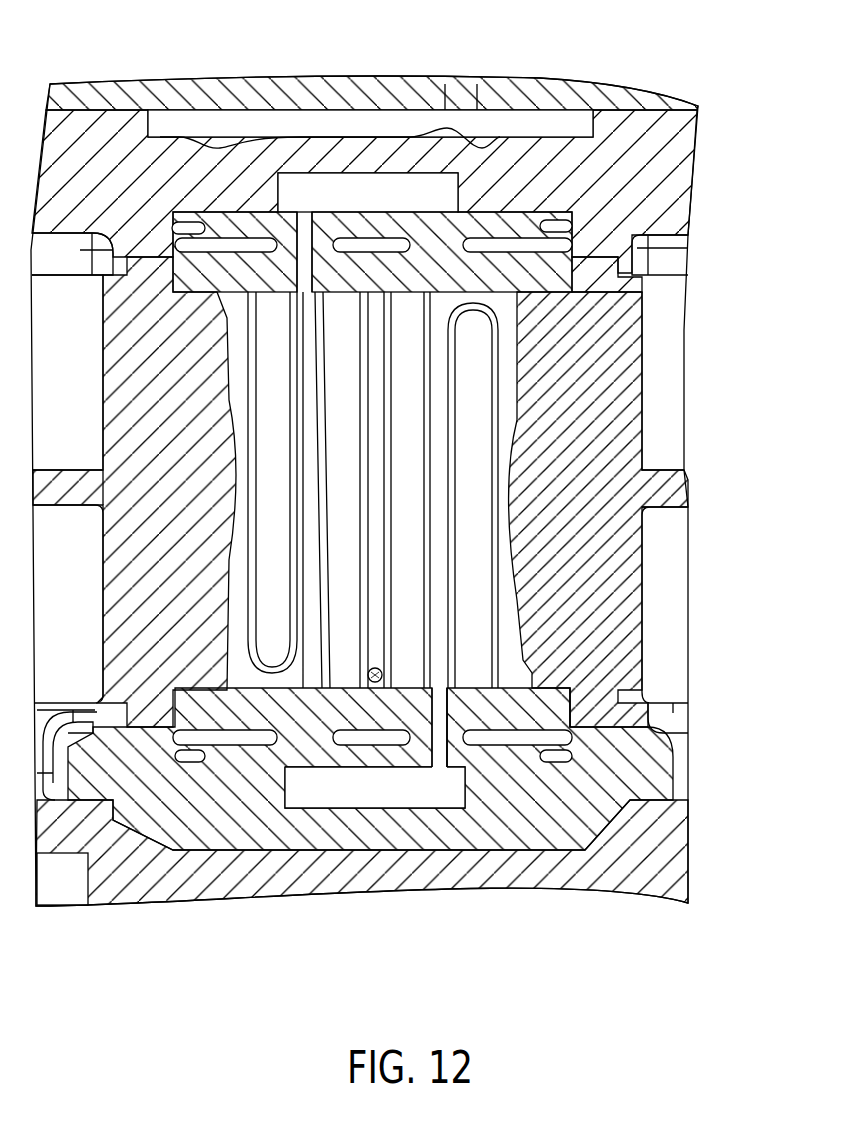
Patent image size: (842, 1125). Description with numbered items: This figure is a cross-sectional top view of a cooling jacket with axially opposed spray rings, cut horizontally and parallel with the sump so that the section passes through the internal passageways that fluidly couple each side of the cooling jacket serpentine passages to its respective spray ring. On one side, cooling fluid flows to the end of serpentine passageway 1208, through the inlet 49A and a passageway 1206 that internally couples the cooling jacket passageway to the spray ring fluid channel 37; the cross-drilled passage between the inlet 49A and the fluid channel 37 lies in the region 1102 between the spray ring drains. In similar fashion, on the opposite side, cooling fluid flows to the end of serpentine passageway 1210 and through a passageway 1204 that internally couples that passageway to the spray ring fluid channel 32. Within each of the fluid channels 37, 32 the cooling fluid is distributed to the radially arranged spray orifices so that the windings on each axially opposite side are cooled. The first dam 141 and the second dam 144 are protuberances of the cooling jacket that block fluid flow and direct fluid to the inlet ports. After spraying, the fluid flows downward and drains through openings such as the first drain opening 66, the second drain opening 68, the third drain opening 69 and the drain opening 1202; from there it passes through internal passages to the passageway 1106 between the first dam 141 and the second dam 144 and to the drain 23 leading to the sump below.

The first fluid channel 32 is at (377, 193).
The drain opening 1202 is at (400, 233).
The passageway 1204 is at (305, 243).
The passageway 1106 is at (373, 382).
The serpentine passageway 1208 is at (440, 408).
The serpentine passageway 1210 is at (313, 468).
The second dam 144 is at (407, 487).
The first dam 141 is at (340, 535).
The drain 23 is at (384, 671).
The supply port 49A is at (443, 688).
The passageway 1206 is at (443, 715).
The third drain opening 69 is at (233, 746).
The fluid channel 37 is at (385, 800).
The first drain opening 66 is at (393, 748).
The region 1102 is at (513, 737).
The second drain opening 68 is at (452, 733).